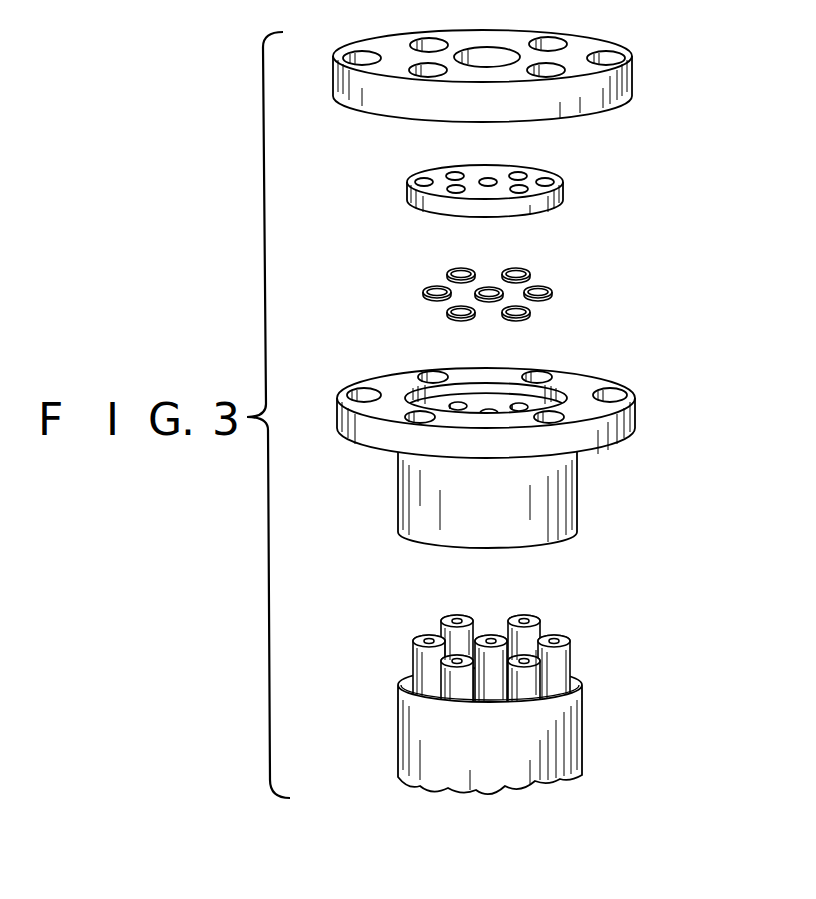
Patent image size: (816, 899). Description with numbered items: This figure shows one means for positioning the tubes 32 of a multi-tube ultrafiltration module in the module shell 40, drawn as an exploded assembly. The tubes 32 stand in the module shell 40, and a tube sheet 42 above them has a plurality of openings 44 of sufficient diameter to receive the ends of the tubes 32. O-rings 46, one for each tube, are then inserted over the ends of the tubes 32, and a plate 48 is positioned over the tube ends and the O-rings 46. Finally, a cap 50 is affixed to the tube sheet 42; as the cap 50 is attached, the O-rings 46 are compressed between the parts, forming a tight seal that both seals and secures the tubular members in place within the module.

The tubes 32 is at (553, 633).
The module shell 40 is at (512, 691).
The tube sheet 42 is at (626, 420).
The openings 44 is at (520, 404).
The O-rings 46 is at (540, 287).
The plate 48 is at (572, 183).
The cap 50 is at (618, 44).